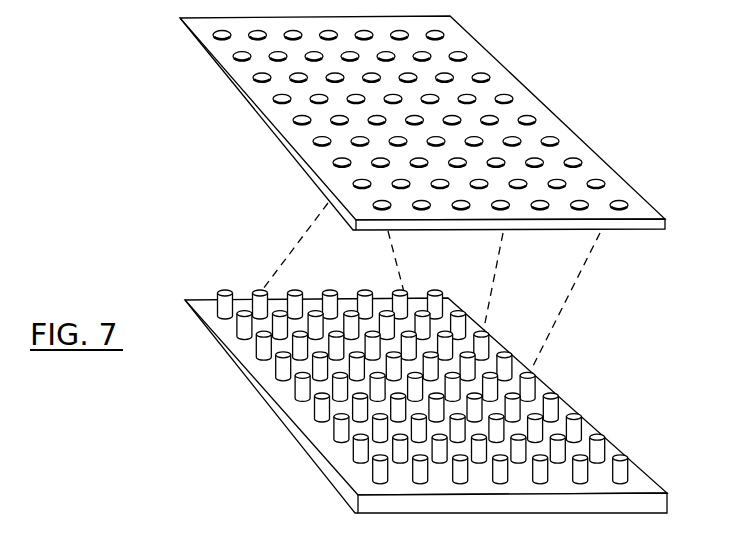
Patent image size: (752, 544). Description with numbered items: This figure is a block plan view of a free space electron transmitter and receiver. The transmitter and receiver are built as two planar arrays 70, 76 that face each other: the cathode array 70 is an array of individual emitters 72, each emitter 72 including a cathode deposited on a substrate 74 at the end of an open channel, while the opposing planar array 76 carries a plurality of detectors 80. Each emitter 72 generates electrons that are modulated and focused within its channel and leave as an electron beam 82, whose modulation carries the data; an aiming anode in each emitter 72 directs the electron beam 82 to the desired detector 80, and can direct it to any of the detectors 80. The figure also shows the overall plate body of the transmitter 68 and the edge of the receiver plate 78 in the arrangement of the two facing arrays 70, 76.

The top plate with holes 68 is at (450, 140).
The planar array 70 is at (444, 401).
The emitter 72 is at (578, 402).
The substrate 74 is at (273, 412).
The planar array 76 is at (422, 118).
The edge of top plate 78 is at (422, 124).
The detector 80 is at (296, 122).
The electron beam 82 is at (298, 240).